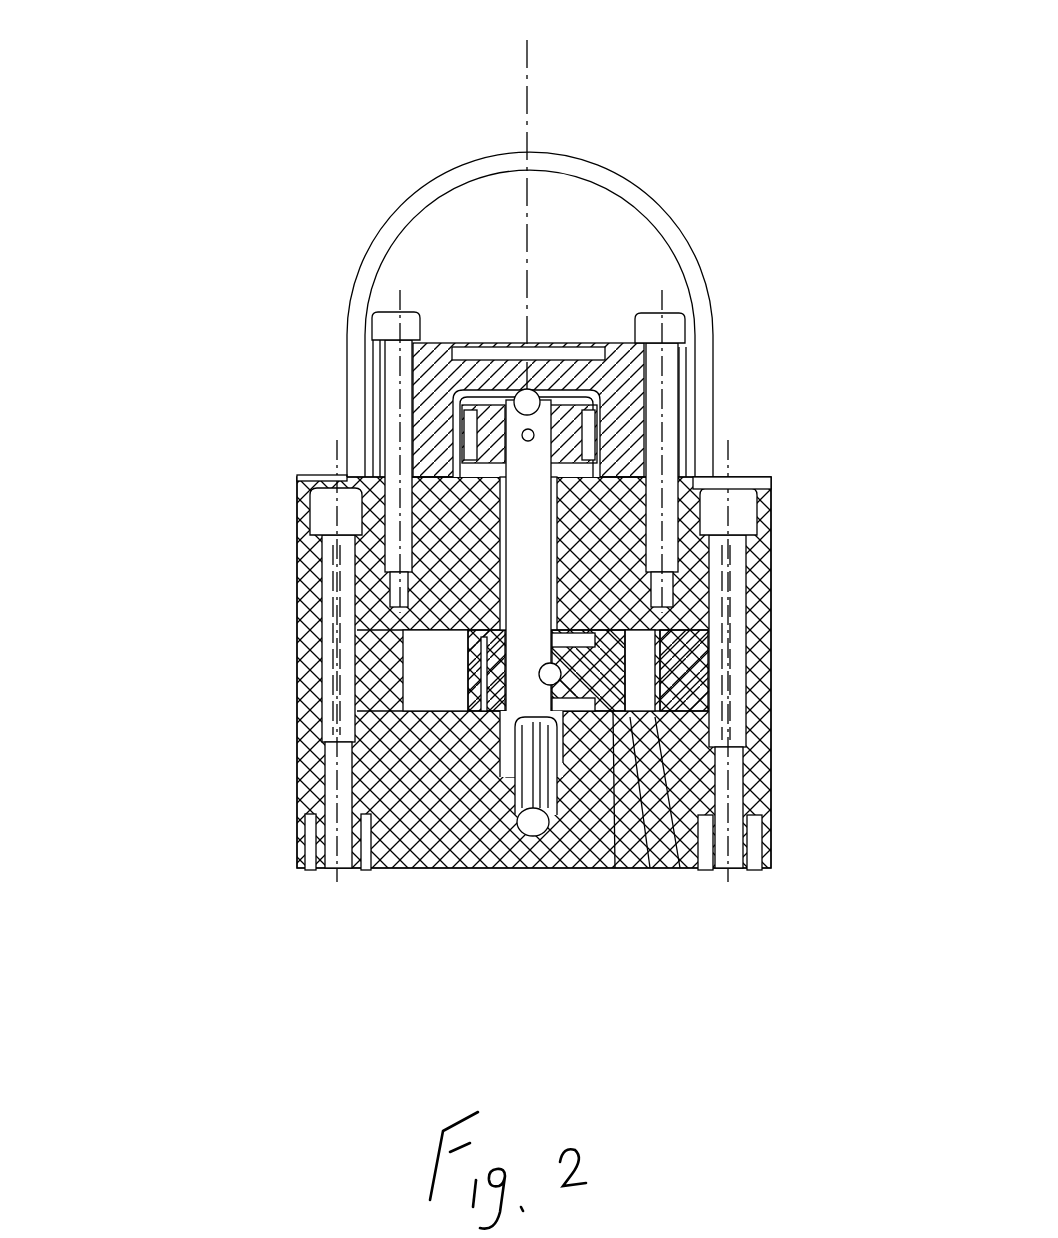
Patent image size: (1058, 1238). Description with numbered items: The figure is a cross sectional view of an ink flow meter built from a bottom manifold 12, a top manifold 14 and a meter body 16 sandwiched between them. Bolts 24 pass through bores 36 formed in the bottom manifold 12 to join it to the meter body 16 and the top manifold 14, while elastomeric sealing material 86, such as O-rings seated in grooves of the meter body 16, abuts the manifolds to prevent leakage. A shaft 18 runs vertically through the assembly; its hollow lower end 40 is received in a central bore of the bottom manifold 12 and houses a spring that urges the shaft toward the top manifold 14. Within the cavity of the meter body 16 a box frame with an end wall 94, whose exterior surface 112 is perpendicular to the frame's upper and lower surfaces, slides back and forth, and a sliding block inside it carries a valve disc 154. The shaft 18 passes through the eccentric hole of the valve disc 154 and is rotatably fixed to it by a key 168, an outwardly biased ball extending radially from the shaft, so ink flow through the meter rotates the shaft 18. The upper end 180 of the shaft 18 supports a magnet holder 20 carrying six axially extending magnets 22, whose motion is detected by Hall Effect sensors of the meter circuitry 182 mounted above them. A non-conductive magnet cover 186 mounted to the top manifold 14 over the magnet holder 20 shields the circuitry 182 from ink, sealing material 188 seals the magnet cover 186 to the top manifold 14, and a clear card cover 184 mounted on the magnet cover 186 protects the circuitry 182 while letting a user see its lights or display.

The bottom manifold 12 is at (302, 804).
The top manifold 14 is at (300, 537).
The meter body 16 is at (300, 694).
The shaft 18 is at (640, 420).
The magnet holder 20 is at (467, 343).
The magnets 22 is at (452, 385).
The bolts 24 is at (302, 586).
The bores 36 is at (307, 468).
The lower end of the shaft 40 is at (517, 790).
The elastomeric sealing material 86 is at (680, 868).
The end wall of the box frame 94 is at (727, 876).
The exterior surfaces of the end walls 112 is at (650, 868).
The valve disc 154 is at (615, 868).
The key 168 is at (539, 673).
The upper end of the shaft 180 is at (543, 398).
The meter circuitry 182 is at (502, 333).
The card cover 184 is at (570, 152).
The magnet cover 186 is at (603, 380).
The sealing material 188 is at (455, 488).